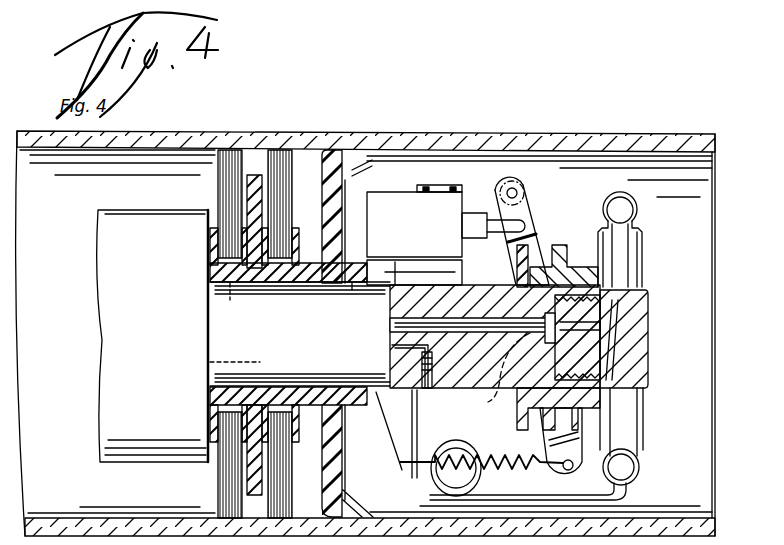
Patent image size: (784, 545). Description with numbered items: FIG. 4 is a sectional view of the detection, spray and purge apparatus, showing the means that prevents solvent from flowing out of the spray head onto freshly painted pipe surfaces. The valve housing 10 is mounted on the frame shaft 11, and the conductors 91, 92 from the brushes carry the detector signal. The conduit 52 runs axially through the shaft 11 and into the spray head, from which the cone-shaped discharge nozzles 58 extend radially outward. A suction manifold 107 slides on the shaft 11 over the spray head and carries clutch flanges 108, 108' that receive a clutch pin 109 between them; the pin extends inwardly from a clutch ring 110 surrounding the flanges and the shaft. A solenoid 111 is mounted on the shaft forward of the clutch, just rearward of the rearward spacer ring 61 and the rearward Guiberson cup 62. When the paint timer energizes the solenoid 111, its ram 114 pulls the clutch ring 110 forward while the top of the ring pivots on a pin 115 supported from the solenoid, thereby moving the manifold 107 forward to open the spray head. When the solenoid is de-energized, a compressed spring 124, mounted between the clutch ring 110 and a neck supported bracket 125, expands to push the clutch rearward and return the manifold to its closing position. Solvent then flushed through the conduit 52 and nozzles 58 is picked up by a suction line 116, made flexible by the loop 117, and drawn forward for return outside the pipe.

The valve case or housing 10 is at (146, 331).
The conductor 91 is at (230, 288).
The conductor 92 is at (210, 362).
The rearward Guiberson cup 62 is at (340, 150).
The rearward spacer ring 61 is at (334, 326).
The frame shaft 11 is at (354, 292).
The conduit 52 is at (388, 332).
The solenoid 111 is at (419, 229).
The solenoid ram 114 is at (492, 224).
The pin 115 is at (515, 188).
The clutch ring 110 is at (530, 207).
The clutch flange 108 is at (558, 316).
The clutch flange 108' is at (497, 266).
The suction manifold 107 is at (658, 246).
The discharge nozzles 58 is at (622, 358).
The clutch pin 109 is at (491, 400).
The compressed spring 124 is at (510, 452).
The loop 117 is at (447, 495).
The neck supported bracket 125 is at (405, 504).
The suction line 116 is at (620, 503).